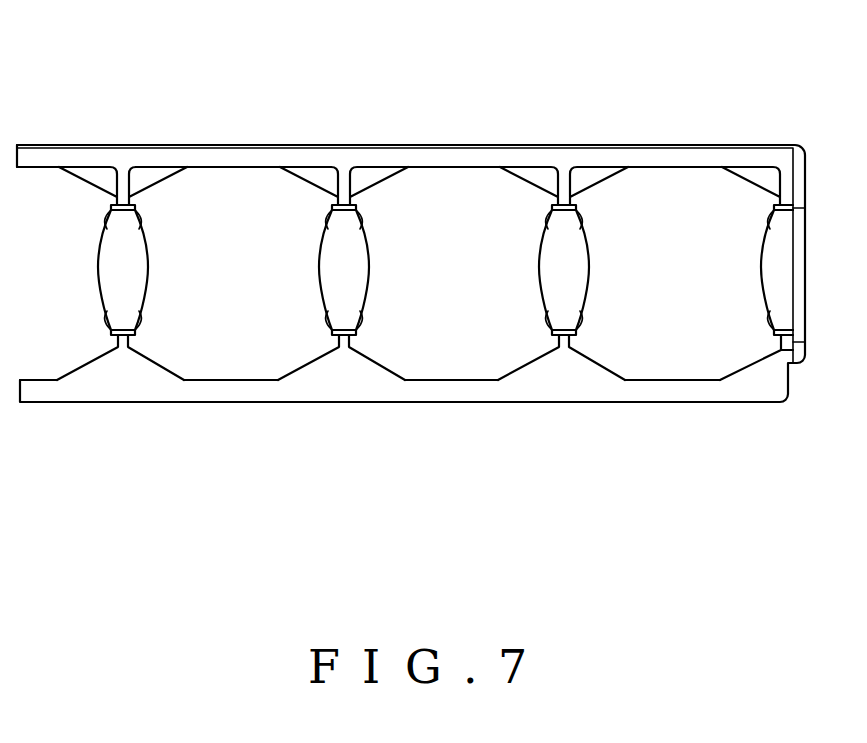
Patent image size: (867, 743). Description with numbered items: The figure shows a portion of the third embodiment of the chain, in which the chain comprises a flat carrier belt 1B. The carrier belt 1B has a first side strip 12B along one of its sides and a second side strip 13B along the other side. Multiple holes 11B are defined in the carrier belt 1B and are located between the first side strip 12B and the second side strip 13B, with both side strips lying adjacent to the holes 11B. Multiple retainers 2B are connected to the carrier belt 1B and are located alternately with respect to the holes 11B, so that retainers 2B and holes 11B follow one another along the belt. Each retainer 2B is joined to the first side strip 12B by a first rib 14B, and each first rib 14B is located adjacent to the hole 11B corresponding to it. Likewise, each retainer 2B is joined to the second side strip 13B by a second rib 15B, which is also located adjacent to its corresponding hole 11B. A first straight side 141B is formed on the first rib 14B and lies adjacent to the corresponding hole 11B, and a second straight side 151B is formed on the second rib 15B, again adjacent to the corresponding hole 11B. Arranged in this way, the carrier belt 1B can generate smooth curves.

The carrier belt 1B is at (465, 65).
The retainer 2B is at (567, 257).
The hole 11B is at (233, 192).
The first side strip 12B is at (413, 155).
The second side strip 13B is at (461, 390).
The first rib 14B is at (145, 175).
The first straight side 141B is at (160, 193).
The second rib 15B is at (152, 368).
The second straight side 151B is at (157, 373).